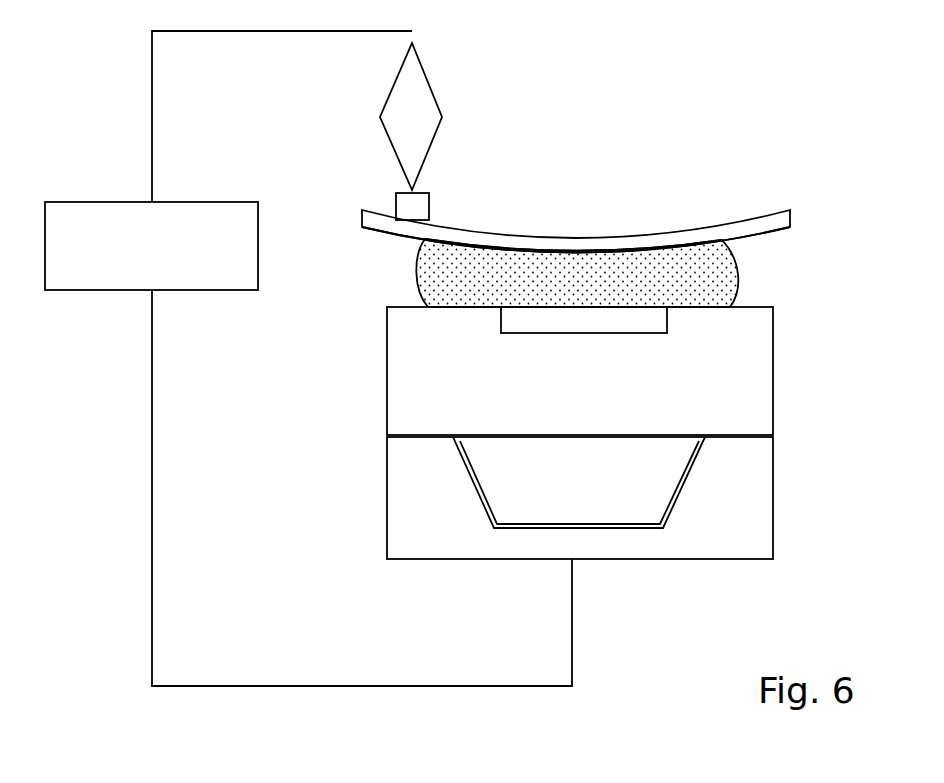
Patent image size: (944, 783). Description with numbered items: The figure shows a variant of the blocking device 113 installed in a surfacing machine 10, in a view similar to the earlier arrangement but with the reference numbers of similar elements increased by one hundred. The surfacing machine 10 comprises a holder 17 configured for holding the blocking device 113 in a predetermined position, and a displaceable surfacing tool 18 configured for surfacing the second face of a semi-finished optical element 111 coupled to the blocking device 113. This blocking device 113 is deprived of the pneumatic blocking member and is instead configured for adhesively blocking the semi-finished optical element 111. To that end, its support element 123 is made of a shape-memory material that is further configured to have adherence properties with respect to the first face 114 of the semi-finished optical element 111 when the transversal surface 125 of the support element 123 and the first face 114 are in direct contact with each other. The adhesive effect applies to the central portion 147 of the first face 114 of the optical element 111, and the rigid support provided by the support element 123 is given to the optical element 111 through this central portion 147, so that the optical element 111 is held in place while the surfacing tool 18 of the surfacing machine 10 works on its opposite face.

The surfacing machine 10 is at (105, 290).
The surfacing tool 18 is at (424, 70).
The semi-finished optical element 111 is at (740, 222).
The transversal surface 125 is at (494, 244).
The support element 123 is at (422, 265).
The first face 114 is at (690, 258).
The blocking device 113 is at (773, 350).
The central portion 147 is at (575, 254).
The holder 17 is at (773, 512).